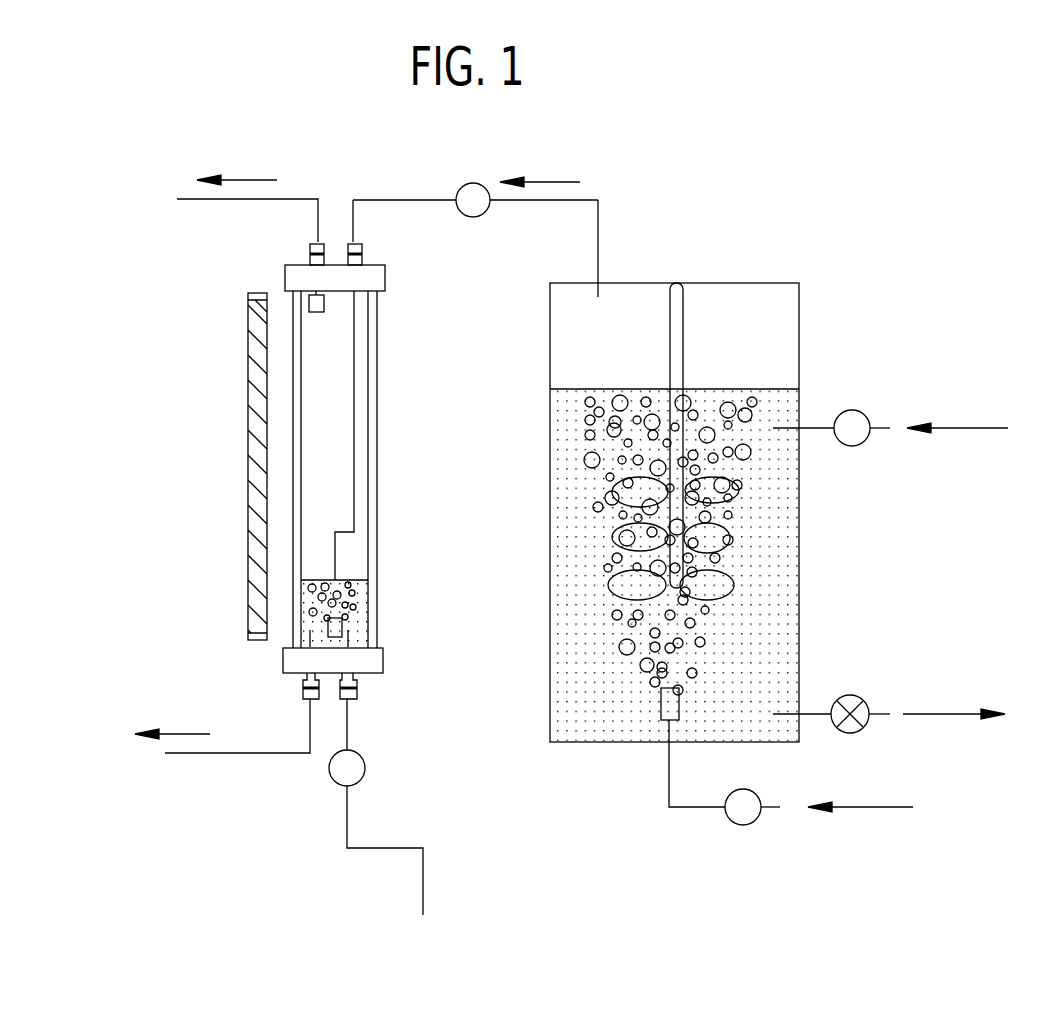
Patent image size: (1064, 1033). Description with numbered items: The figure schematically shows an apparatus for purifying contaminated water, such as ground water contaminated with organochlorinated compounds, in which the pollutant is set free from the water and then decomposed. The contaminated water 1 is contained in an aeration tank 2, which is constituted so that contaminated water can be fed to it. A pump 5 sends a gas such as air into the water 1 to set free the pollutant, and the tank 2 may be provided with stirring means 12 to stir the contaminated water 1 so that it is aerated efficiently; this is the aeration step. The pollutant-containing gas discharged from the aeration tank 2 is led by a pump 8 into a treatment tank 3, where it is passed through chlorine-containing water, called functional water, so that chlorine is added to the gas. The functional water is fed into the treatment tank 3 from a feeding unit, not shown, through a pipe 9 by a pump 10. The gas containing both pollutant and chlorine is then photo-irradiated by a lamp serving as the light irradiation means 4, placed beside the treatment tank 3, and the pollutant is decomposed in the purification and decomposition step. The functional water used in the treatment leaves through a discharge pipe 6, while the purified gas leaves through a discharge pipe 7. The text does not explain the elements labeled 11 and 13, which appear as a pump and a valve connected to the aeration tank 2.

The contaminated water 1 is at (782, 560).
The aeration tank 2 is at (765, 293).
The treatment tank 3 is at (362, 342).
The light irradiation means 4 is at (248, 345).
The pump 5 is at (737, 825).
The discharge pipe 6 is at (213, 753).
The discharge pipe 7 is at (230, 200).
The pump 8 is at (482, 183).
The pipe 9 is at (383, 848).
The pump 10 is at (365, 772).
The pump 11 is at (868, 415).
The stirring means 12 is at (684, 298).
The valve 13 is at (867, 695).